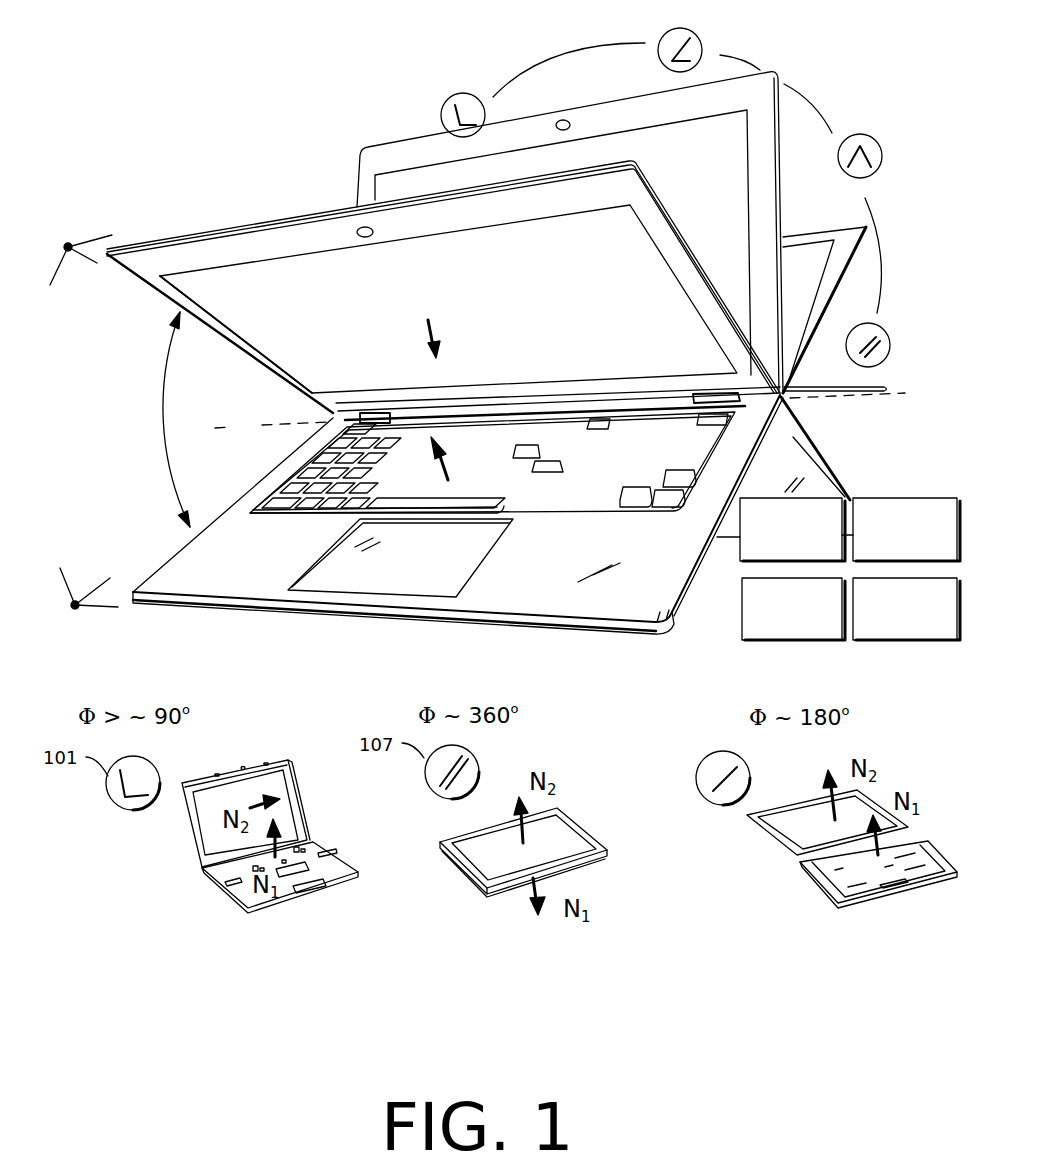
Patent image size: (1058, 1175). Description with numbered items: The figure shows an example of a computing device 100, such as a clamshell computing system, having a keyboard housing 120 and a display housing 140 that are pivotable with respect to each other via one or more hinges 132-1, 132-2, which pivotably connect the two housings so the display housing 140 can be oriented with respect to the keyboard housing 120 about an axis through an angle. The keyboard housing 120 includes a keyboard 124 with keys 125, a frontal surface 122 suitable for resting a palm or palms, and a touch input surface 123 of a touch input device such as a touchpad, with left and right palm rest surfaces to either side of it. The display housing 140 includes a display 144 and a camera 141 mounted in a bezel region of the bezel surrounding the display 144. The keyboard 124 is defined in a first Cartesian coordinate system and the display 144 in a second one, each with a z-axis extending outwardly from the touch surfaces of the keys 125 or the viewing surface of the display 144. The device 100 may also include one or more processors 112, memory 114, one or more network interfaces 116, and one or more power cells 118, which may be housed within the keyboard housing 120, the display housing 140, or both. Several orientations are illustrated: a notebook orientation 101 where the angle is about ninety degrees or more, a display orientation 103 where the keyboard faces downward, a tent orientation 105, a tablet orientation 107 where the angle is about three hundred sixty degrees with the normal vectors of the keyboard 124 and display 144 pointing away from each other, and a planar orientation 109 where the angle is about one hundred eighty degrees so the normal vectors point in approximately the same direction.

The computing device 100 is at (276, 116).
The orientation 101 is at (447, 103).
The orientation 103 is at (663, 36).
The orientation 105 is at (872, 139).
The orientation 107 is at (885, 333).
The orientation 109 is at (698, 764).
The processors 112 is at (792, 529).
The memory 114 is at (906, 529).
The network interfaces 116 is at (793, 609).
The power cells 118 is at (906, 609).
The keyboard housing 120 is at (200, 613).
The frontal surface 122 is at (497, 494).
The touch input surface 123 is at (400, 558).
The keyboard 124 is at (489, 463).
The keys 125 is at (632, 504).
The hinge 132-1 is at (381, 412).
The hinge 132-2 is at (692, 392).
The display housing 140 is at (197, 234).
The camera 141 is at (366, 240).
The display 144 is at (448, 299).